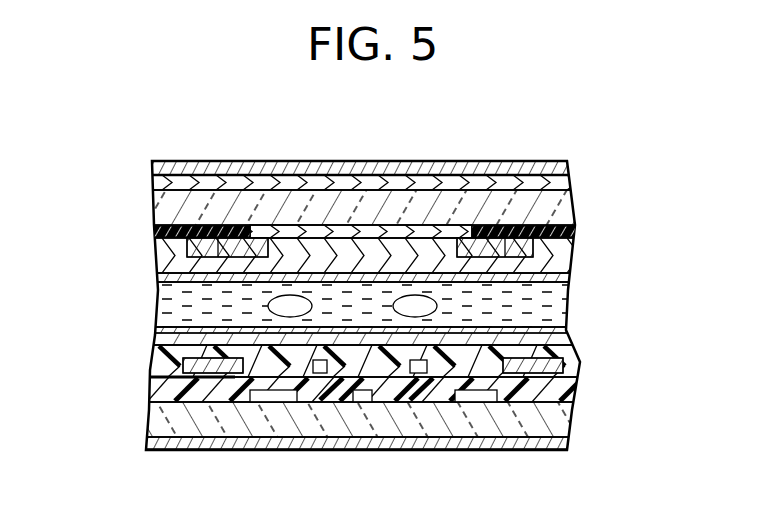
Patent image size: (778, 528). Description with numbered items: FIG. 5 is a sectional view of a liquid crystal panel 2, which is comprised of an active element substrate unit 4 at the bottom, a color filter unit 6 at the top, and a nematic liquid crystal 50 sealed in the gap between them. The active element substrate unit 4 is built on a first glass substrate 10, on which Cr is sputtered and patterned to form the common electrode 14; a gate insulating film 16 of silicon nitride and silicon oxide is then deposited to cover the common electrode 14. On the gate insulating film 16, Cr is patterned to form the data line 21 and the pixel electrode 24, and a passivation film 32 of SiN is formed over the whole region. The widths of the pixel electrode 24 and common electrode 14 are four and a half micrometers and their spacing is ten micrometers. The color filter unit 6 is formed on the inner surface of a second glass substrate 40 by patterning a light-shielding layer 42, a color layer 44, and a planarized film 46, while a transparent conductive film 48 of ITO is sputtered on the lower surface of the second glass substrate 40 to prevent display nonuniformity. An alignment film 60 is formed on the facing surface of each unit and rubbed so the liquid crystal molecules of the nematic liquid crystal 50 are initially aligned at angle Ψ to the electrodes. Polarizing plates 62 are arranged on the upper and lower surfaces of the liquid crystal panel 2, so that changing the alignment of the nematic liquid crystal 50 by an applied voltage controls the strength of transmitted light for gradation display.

The liquid crystal panel 2 is at (597, 138).
The active element substrate unit 4 is at (598, 363).
The color filter unit 6 is at (596, 237).
The first glass substrate 10 is at (568, 418).
The common electrode 14 is at (276, 403).
The gate insulating film 16 is at (150, 390).
The data line 21 is at (155, 336).
The pixel electrode 24 is at (336, 380).
The passivation film 32 is at (152, 364).
The second glass substrate 40 is at (153, 211).
The light-shielding layer 42 is at (153, 232).
The color layer 44 is at (460, 224).
The planarized film 46 is at (567, 259).
The transparent conductive film 48 is at (152, 182).
The nematic liquid crystal 50 is at (157, 305).
The alignment film 60 is at (567, 281).
The polarizing plates 62 is at (411, 161).